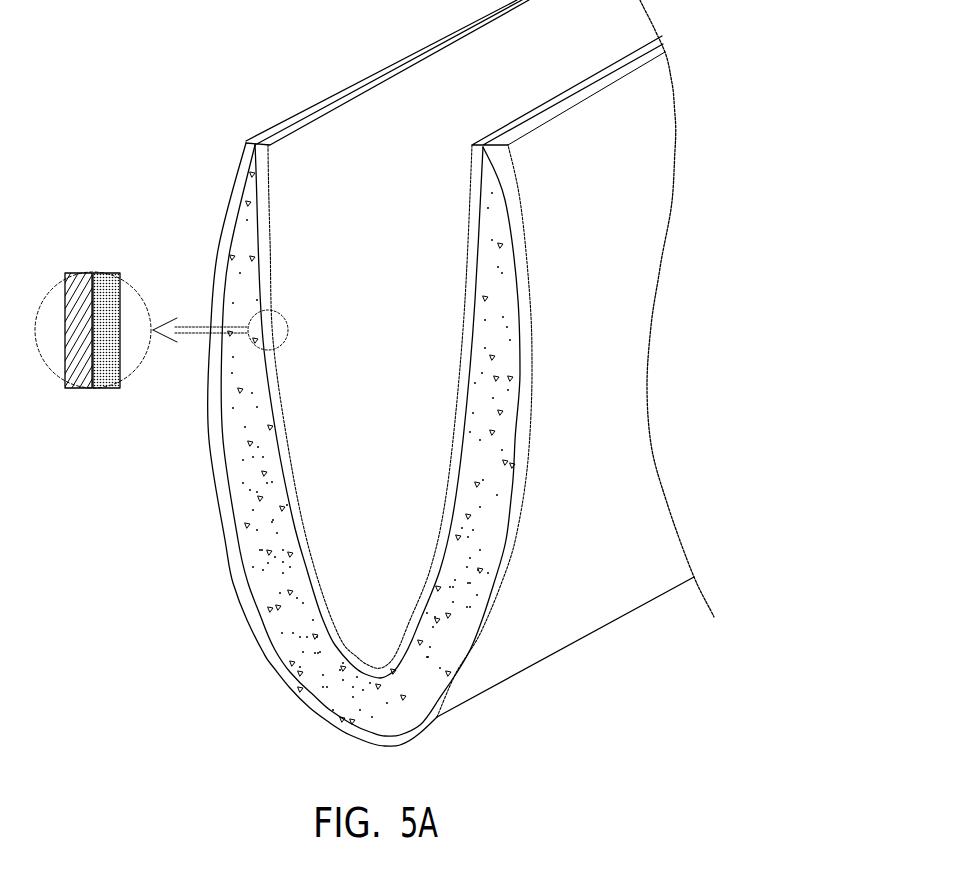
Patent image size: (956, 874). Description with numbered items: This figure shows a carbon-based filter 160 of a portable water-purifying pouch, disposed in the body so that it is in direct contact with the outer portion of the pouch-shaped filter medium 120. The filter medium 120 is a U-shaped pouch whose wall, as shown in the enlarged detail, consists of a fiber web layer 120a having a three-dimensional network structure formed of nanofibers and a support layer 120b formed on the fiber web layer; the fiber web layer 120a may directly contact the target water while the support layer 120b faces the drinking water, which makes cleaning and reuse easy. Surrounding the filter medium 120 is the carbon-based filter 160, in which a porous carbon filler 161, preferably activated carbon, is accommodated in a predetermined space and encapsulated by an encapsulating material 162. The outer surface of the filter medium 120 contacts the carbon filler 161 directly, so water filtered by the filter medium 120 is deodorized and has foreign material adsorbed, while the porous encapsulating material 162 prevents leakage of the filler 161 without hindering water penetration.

The pouch-shaped filter medium 120 is at (138, 200).
The fiber web layer 120a is at (107, 275).
The support layer 120b is at (80, 275).
The carbon-based filter 160 is at (122, 460).
The porous carbon filler 161 is at (250, 525).
The encapsulating material 162 is at (220, 461).